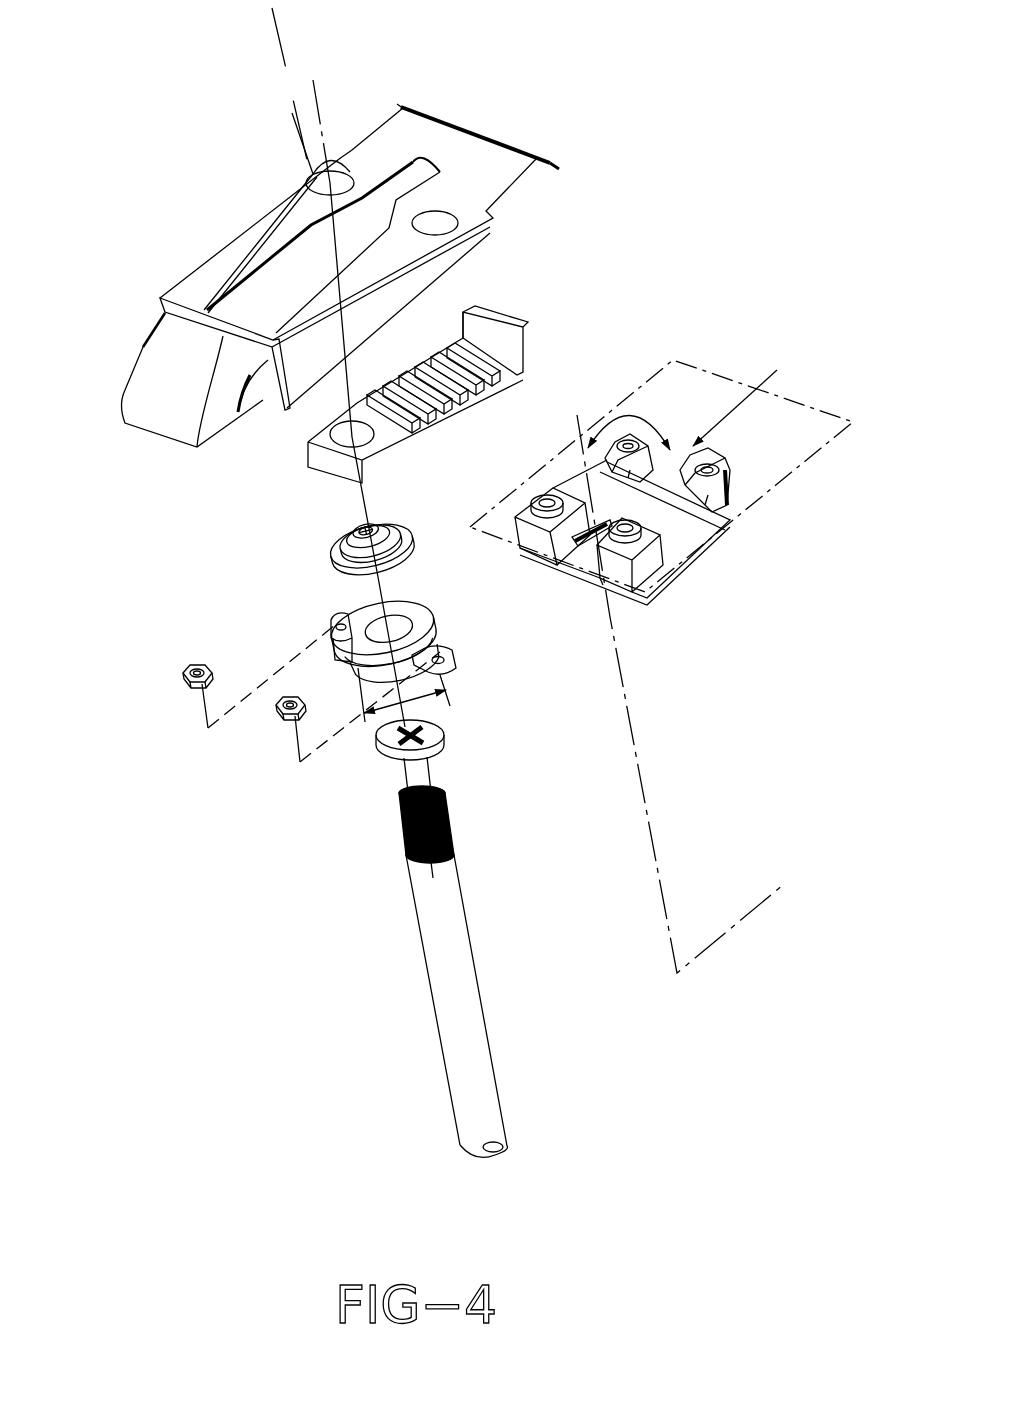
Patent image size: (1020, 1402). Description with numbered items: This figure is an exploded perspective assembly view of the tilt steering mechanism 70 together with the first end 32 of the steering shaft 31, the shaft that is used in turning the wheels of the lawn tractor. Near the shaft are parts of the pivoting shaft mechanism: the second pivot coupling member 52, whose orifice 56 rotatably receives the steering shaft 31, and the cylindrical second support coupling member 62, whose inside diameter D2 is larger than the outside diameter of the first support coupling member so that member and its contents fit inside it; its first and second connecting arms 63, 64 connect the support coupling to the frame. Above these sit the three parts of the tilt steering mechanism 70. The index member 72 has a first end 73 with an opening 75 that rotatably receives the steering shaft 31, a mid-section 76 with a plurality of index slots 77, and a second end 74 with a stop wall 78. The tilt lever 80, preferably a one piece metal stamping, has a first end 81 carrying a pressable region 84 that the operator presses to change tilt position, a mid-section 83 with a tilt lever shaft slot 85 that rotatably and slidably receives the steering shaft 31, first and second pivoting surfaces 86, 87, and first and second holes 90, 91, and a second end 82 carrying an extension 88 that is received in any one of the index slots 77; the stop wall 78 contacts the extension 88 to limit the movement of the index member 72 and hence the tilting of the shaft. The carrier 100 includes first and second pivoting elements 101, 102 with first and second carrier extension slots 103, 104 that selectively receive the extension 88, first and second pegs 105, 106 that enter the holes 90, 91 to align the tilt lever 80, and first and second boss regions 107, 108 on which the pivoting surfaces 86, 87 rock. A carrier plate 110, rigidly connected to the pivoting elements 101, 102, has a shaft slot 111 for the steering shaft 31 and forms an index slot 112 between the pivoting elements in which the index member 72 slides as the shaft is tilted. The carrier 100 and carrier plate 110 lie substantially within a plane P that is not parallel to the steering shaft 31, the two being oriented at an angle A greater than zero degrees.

The steering shaft 31 is at (468, 1125).
The first end 32 is at (422, 890).
The second pivot coupling member 52 is at (434, 729).
The orifice 56 is at (383, 731).
The second support coupling member 62 is at (433, 633).
The first connecting arm 63 is at (444, 657).
The second connecting arm 64 is at (336, 640).
The tilt steering mechanism 70 is at (682, 86).
The index member 72 is at (550, 305).
The first end 73 is at (342, 472).
The second end 74 is at (527, 362).
The opening 75 is at (325, 431).
The mid-section 76 is at (375, 377).
The index slots 77 is at (415, 367).
The stop wall 78 is at (476, 318).
The tilt lever 80 is at (527, 96).
The first end 81 is at (122, 415).
The second end 82 is at (433, 110).
The mid-section 83 is at (268, 231).
The pressable region 84 is at (170, 420).
The tilt lever shaft slot 85 is at (262, 306).
The first pivoting surface 86 is at (427, 292).
The second pivoting surface 87 is at (373, 222).
The extension 88 is at (551, 170).
The first hole 90 is at (449, 205).
The second hole 91 is at (312, 172).
The carrier 100 is at (772, 418).
The first pivoting element 101 is at (696, 520).
The second pivoting element 102 is at (589, 451).
The first carrier extension slot 103 is at (714, 481).
The second carrier extension slot 104 is at (600, 419).
The first peg 105 is at (643, 538).
The second peg 106 is at (546, 495).
The first boss region 107 is at (612, 583).
The second boss region 108 is at (532, 504).
The carrier plate 110 is at (681, 461).
The shaft slot 111 is at (572, 553).
The index slot 112 is at (759, 389).
The plane P is at (673, 362).
The angle A is at (634, 428).
The inside diameter D2 is at (412, 707).